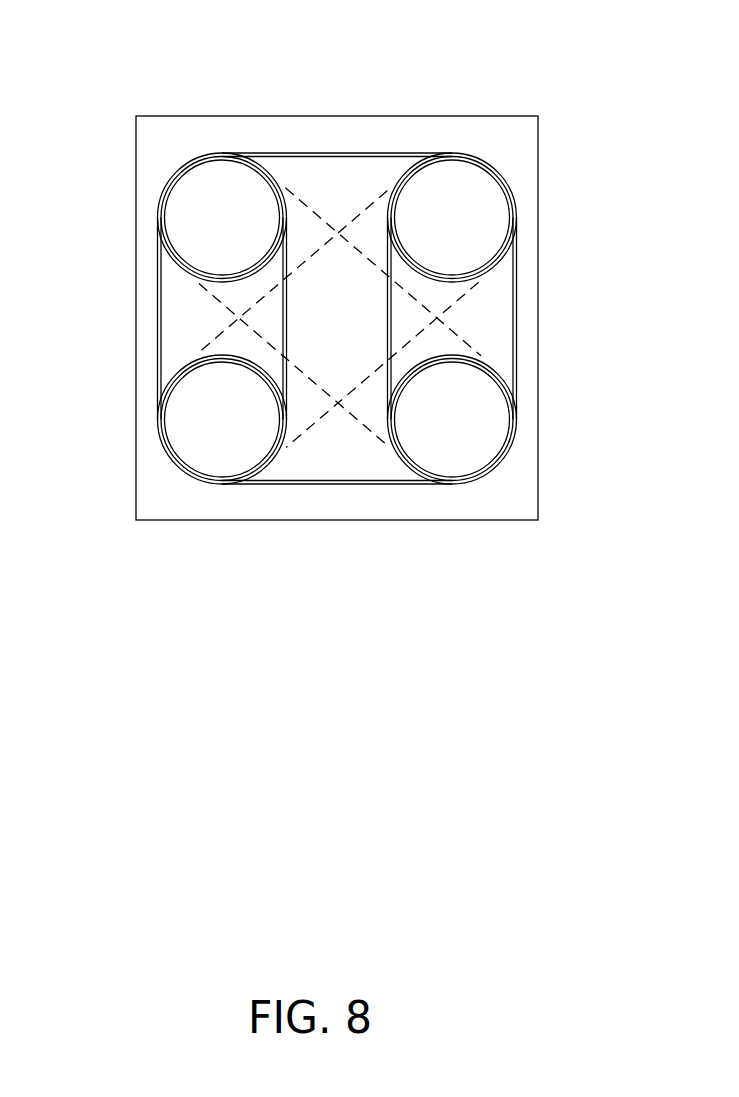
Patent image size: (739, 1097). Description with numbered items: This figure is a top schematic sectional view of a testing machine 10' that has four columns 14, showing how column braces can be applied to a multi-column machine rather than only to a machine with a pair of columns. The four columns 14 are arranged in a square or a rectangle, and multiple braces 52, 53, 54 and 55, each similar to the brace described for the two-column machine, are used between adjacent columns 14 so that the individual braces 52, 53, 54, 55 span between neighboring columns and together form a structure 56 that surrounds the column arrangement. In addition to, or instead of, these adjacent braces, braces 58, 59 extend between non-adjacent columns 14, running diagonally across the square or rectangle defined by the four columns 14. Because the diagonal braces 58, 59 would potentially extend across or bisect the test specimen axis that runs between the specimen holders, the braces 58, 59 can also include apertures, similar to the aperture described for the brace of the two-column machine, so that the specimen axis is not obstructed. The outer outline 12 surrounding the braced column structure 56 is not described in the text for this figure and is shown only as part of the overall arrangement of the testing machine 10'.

The testing machine 10' is at (333, 302).
The housing 12 is at (374, 116).
The columns 14 is at (173, 188).
The brace 52 is at (518, 318).
The brace 53 is at (363, 485).
The brace 54 is at (157, 315).
The brace 55 is at (337, 153).
The structure 56 is at (441, 124).
The brace 58 is at (338, 233).
The brace 59 is at (300, 430).